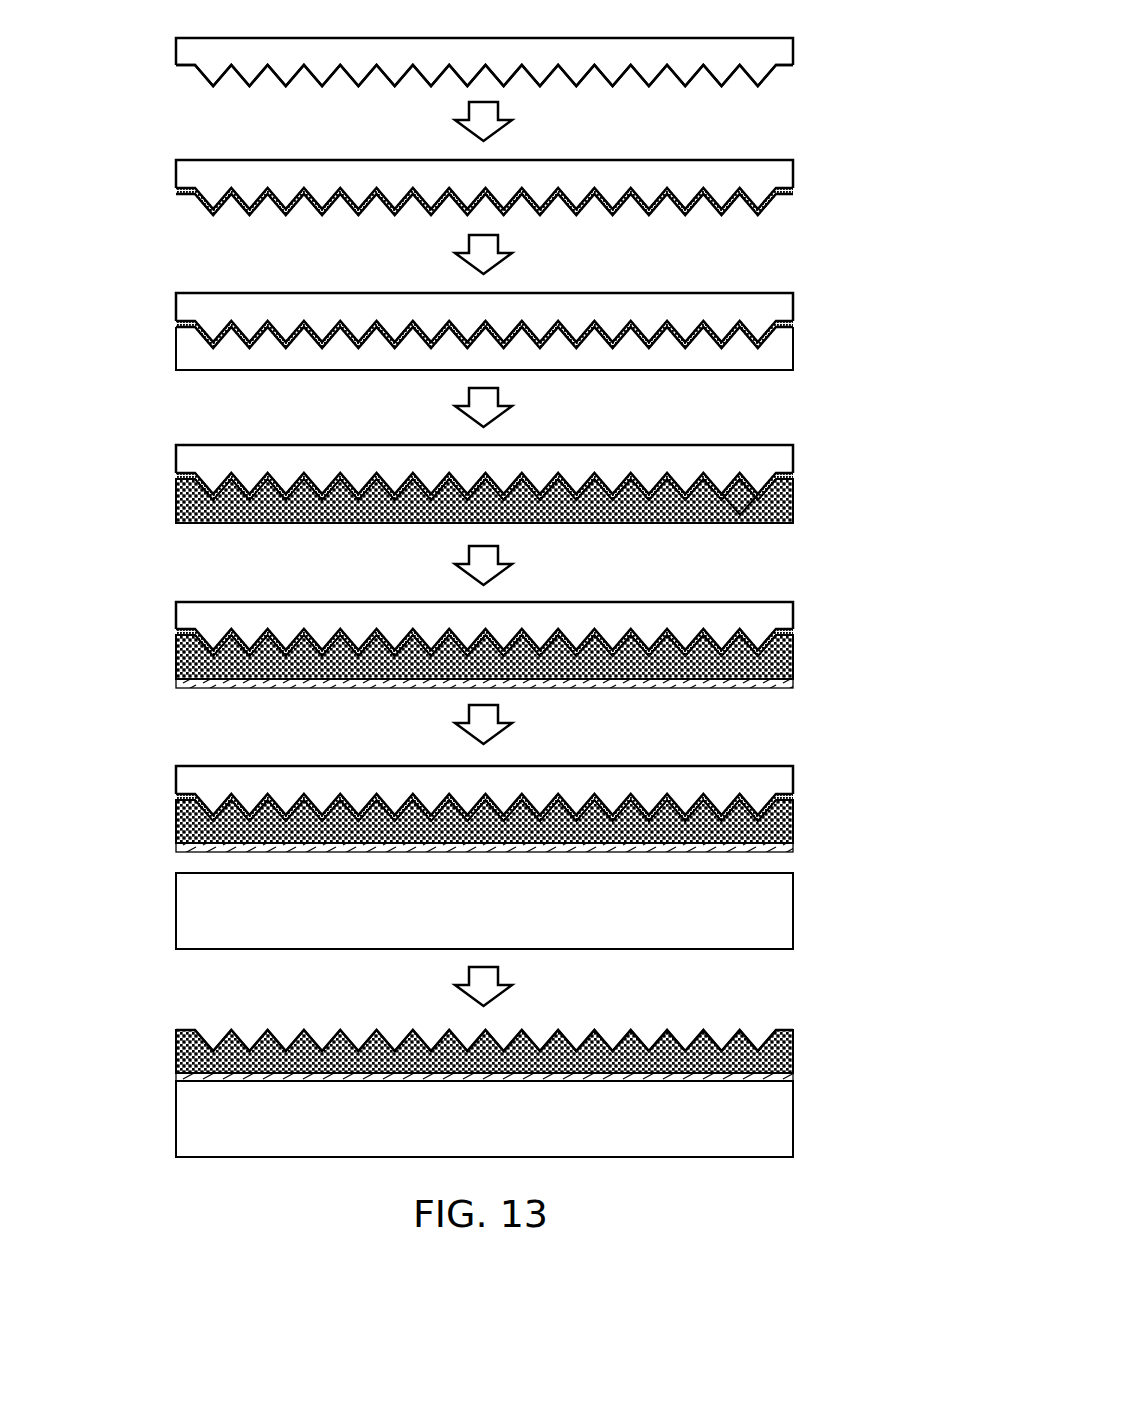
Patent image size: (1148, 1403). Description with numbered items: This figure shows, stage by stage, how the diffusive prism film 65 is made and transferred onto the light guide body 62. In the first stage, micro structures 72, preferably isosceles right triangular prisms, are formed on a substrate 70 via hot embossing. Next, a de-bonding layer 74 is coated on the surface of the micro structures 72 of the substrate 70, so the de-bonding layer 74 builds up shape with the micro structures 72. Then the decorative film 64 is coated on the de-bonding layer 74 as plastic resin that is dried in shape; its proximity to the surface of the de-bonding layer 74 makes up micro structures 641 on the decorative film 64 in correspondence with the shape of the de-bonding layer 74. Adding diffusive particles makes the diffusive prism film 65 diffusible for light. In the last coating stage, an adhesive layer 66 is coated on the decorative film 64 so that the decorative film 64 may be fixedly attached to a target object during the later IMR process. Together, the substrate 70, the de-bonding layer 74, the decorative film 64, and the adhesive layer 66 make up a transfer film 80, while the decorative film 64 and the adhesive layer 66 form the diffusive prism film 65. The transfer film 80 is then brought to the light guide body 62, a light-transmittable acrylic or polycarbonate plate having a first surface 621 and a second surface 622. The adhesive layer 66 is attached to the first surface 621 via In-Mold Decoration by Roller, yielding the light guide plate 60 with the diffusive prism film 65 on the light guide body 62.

The substrate 70 is at (178, 43).
The micro structures 72 is at (243, 72).
The de-bonding layer 74 is at (178, 190).
The decorative film 64 is at (795, 340).
The micro structures 641 is at (743, 500).
The adhesive layer 66 is at (795, 681).
The transfer film 80 is at (760, 757).
The diffusive prism film 65 is at (848, 795).
The light guide body 62 is at (787, 904).
The first surface 621 is at (219, 873).
The second surface 622 is at (234, 950).
The light guide plate 60 is at (758, 1012).